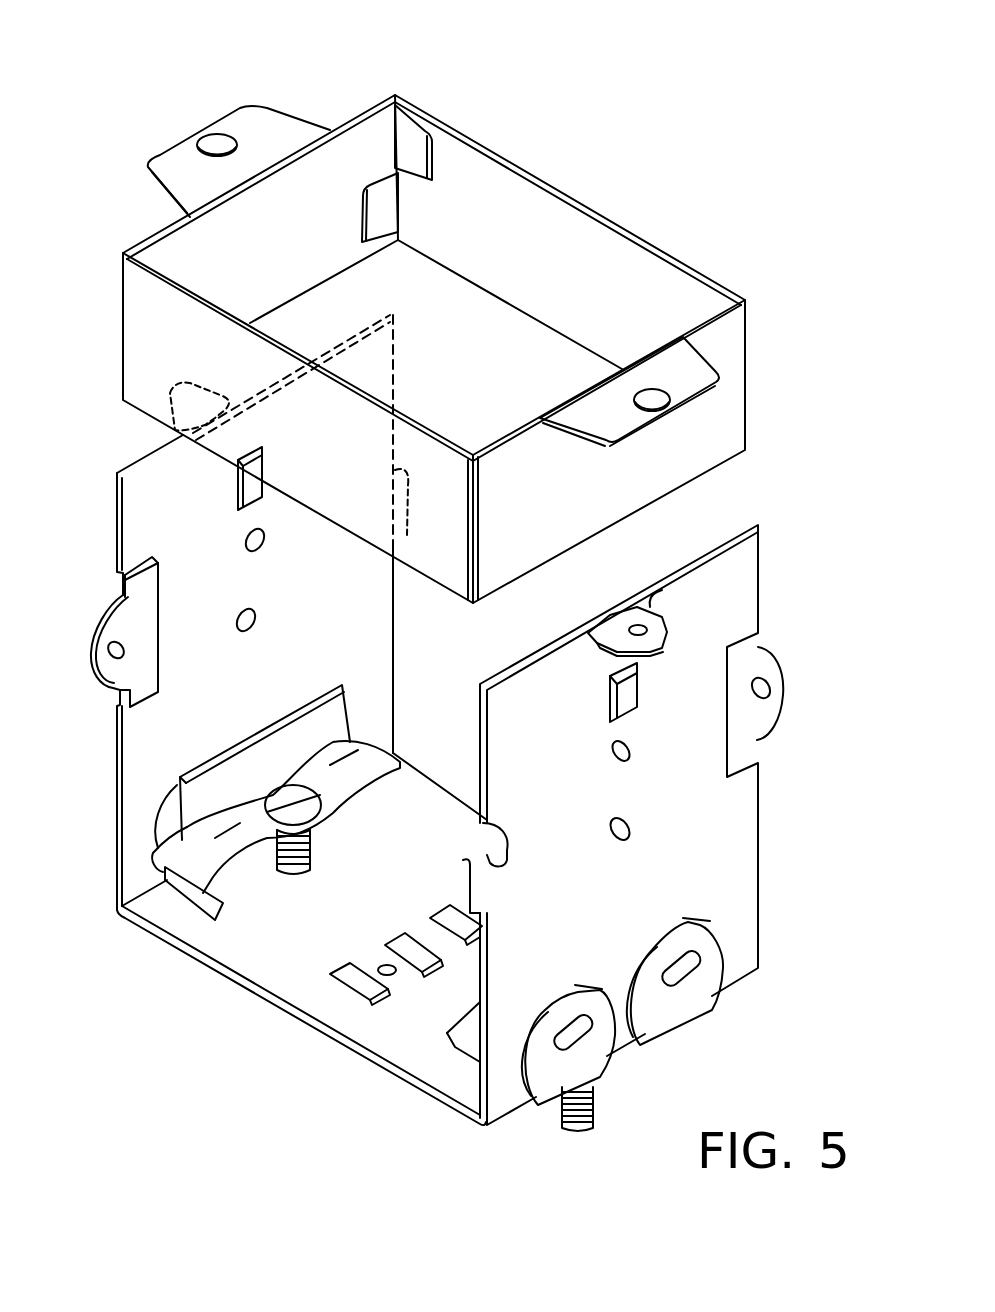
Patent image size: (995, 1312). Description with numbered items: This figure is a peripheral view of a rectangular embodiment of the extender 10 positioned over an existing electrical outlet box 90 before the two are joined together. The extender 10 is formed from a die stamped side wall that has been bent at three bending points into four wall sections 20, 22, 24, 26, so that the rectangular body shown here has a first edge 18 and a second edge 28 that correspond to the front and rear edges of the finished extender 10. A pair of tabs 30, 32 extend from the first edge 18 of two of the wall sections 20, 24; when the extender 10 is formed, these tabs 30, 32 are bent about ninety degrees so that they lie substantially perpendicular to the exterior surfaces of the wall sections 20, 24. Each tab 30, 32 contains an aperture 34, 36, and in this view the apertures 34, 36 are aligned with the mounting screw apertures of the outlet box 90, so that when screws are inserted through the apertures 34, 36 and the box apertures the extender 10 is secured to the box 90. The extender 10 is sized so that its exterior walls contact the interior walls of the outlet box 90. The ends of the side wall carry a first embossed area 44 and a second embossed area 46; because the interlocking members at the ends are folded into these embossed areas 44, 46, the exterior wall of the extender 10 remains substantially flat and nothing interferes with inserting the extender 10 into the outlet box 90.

The extender 10 is at (734, 260).
The first edge 18 is at (653, 242).
The wall section 20 is at (207, 262).
The wall section 22 is at (170, 341).
The wall section 24 is at (697, 445).
The wall section 26 is at (623, 277).
The second edge 28 is at (125, 395).
The tab 30 is at (170, 163).
The tab 32 is at (580, 437).
The aperture 34 is at (217, 143).
The aperture 36 is at (655, 405).
The first embossed area 44 is at (375, 222).
The second embossed area 46 is at (413, 143).
The outlet box 90 is at (727, 832).